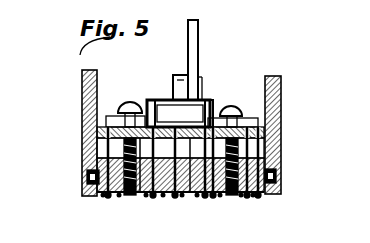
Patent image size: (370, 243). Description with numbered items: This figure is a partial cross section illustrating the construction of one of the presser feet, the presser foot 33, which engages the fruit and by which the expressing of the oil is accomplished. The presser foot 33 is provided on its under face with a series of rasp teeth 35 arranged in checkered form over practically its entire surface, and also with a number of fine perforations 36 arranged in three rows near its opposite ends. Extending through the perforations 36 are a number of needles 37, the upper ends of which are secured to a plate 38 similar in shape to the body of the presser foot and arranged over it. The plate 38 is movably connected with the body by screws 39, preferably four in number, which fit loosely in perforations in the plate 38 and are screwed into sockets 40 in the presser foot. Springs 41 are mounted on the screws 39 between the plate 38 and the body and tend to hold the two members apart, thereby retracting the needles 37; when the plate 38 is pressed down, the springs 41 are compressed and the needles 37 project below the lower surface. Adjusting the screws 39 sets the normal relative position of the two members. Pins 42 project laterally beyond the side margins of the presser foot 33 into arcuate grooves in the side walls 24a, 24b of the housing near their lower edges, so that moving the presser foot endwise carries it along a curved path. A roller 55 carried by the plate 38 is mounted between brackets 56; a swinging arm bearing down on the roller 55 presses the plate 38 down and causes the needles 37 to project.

The side wall of housing 24a is at (82, 116).
The side wall of housing 24b is at (282, 152).
The presser foot 33 is at (100, 197).
The rasp teeth 35 is at (133, 197).
The perforations 36 is at (82, 163).
The needles 37 is at (110, 197).
The plate 38 is at (282, 113).
The screws 39 is at (240, 97).
The sockets 40 is at (143, 200).
The springs 41 is at (100, 150).
The pins 42 is at (82, 183).
The roller 55 is at (168, 98).
The brackets 56 is at (150, 100).